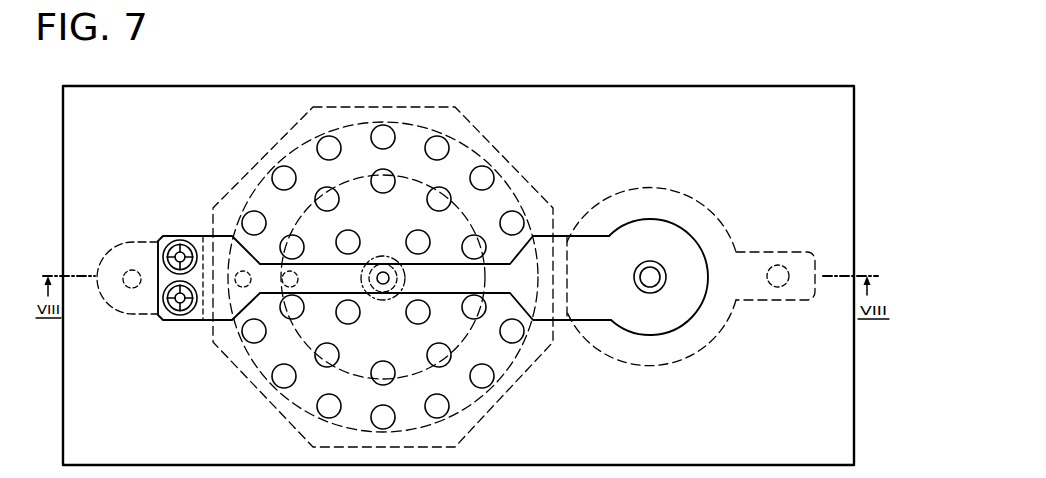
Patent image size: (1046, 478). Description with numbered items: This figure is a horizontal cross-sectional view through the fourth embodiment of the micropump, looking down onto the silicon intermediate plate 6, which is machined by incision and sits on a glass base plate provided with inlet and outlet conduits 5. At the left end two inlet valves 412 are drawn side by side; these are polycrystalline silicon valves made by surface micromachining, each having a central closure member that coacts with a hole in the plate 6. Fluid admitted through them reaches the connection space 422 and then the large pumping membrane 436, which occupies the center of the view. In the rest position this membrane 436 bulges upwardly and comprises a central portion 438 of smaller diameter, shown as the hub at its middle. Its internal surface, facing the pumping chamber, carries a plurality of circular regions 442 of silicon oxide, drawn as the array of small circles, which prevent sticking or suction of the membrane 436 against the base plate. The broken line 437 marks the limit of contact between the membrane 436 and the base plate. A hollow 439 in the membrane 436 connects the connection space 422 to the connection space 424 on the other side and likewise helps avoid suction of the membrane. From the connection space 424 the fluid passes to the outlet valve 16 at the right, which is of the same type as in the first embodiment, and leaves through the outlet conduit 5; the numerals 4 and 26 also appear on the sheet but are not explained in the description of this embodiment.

The mounting tab 4 is at (128, 268).
The inlet and outlet conduits 5 is at (778, 288).
The intermediate plate 6 is at (775, 221).
The outlet valve 16 is at (664, 291).
The rotor hub 26 is at (652, 259).
The inlet valves 412 is at (182, 311).
The connection space 422 is at (213, 307).
The connection space 424 is at (590, 291).
The pumping membrane 436 is at (407, 147).
The broken line 437 is at (476, 146).
The central portion 438 is at (380, 281).
The hollow 439 is at (492, 277).
The circular regions 442 is at (441, 362).